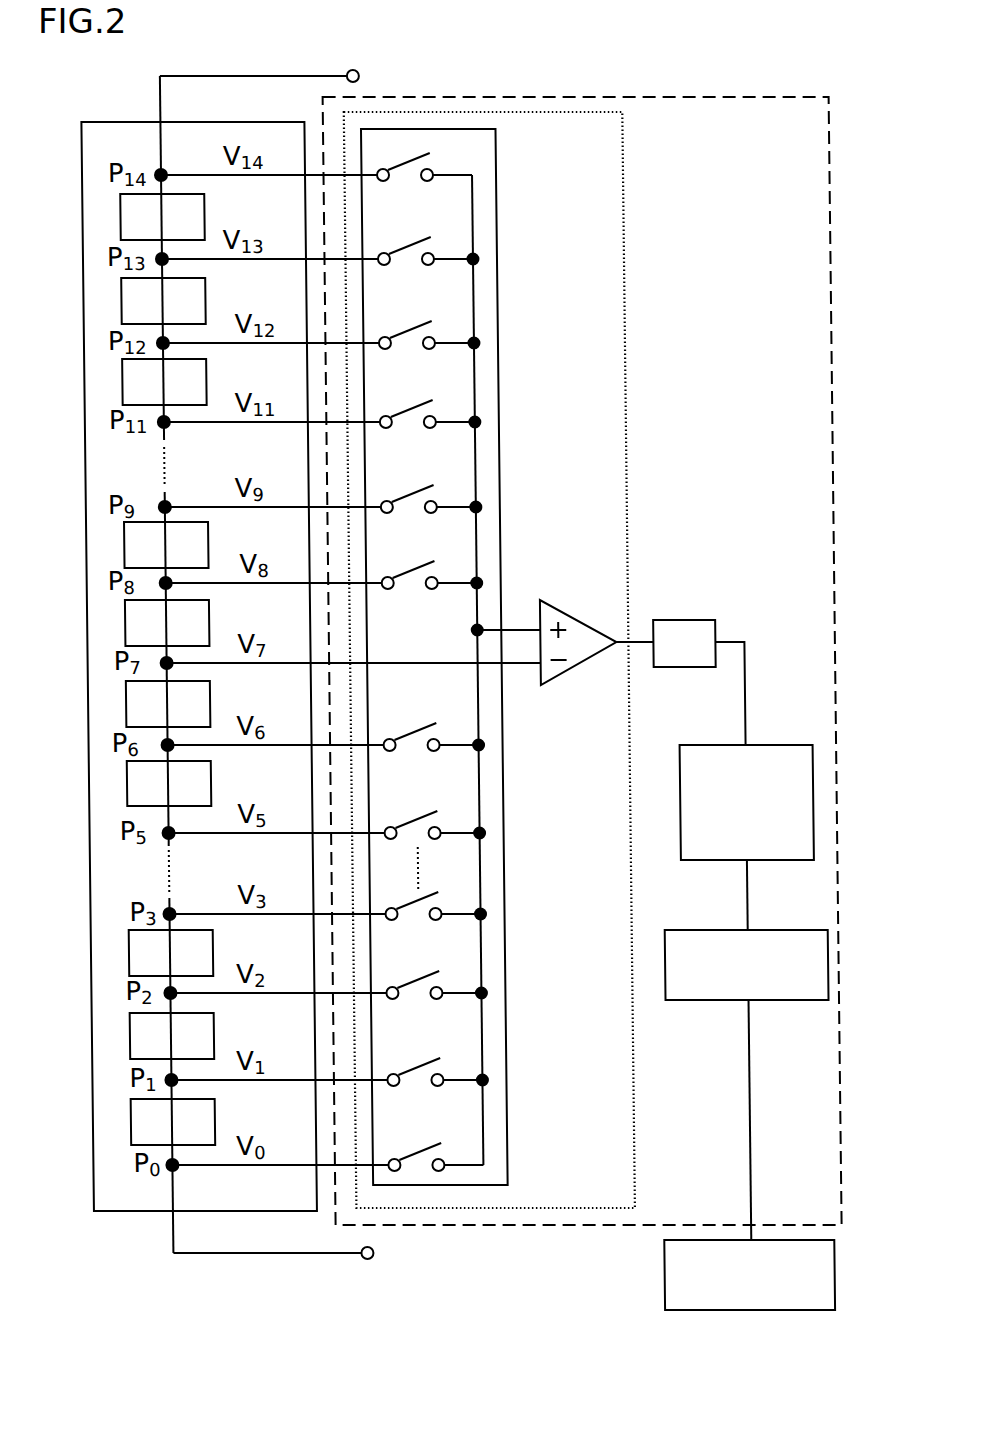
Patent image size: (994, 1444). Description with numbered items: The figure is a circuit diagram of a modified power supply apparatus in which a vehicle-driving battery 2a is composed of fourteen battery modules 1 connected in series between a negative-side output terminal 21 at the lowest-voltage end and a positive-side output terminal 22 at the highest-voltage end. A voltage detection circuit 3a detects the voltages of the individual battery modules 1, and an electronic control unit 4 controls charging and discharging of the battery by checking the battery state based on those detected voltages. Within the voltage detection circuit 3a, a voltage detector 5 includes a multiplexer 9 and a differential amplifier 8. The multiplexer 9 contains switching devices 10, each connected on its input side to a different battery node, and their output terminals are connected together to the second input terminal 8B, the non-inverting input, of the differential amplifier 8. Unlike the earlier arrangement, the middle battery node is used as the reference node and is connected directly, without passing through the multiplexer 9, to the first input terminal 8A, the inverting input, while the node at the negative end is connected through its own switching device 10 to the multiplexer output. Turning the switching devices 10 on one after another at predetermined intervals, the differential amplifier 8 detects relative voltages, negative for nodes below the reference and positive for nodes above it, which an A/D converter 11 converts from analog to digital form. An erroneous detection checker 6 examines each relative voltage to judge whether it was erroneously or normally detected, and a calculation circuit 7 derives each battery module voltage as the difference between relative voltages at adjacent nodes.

The battery module 1 is at (118, 217).
The vehicle-driving battery 2a is at (97, 122).
The voltage detection circuit 3a is at (536, 98).
The electronic control unit 4 is at (650, 1262).
The voltage detector 5 is at (622, 374).
The erroneous detection checker 6 is at (768, 745).
The calculation circuit 7 is at (758, 930).
The differential amplifier 8 is at (561, 608).
The first input terminal 8A is at (532, 686).
The second input terminal 8B is at (533, 628).
The multiplexer 9 is at (495, 267).
The switching device 10 is at (400, 243).
The A/D converter 11 is at (675, 620).
The negative-side output terminal 21 is at (359, 1253).
The positive-side output terminal 22 is at (358, 76).